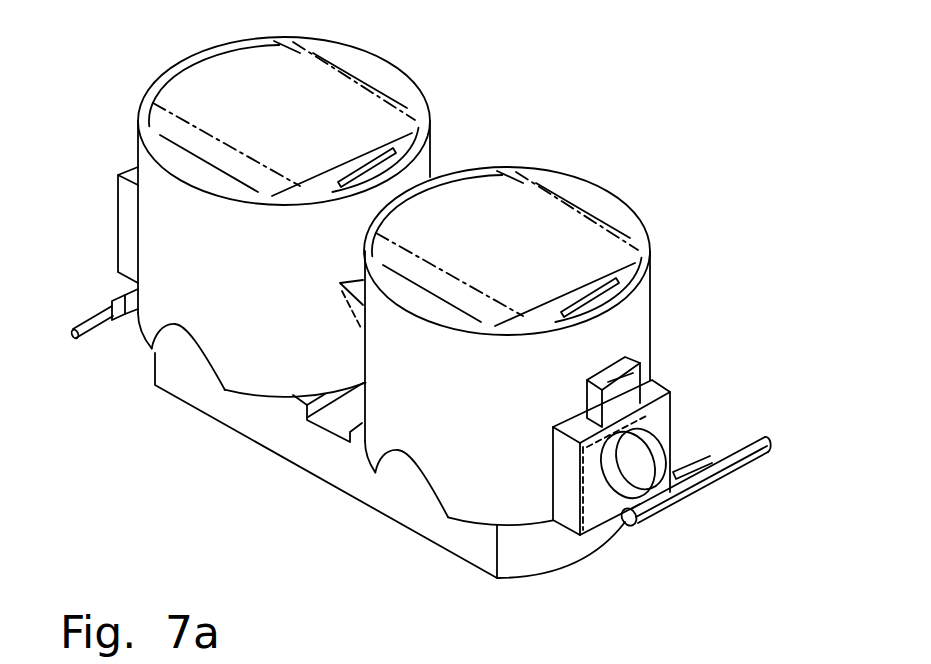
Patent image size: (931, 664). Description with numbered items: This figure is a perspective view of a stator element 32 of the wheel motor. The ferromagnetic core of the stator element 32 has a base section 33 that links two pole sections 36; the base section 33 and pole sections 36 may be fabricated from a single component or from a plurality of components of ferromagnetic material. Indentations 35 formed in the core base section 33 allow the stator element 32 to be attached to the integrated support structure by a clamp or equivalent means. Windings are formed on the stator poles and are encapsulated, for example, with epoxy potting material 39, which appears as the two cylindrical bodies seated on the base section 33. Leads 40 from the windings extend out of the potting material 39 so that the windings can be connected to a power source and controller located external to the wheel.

The stator element 32 is at (695, 173).
The base section 33 is at (237, 415).
The indentations 35 is at (335, 420).
The pole sections 36 is at (367, 113).
The epoxy potting material 39 is at (422, 177).
The leads 40 is at (90, 338).